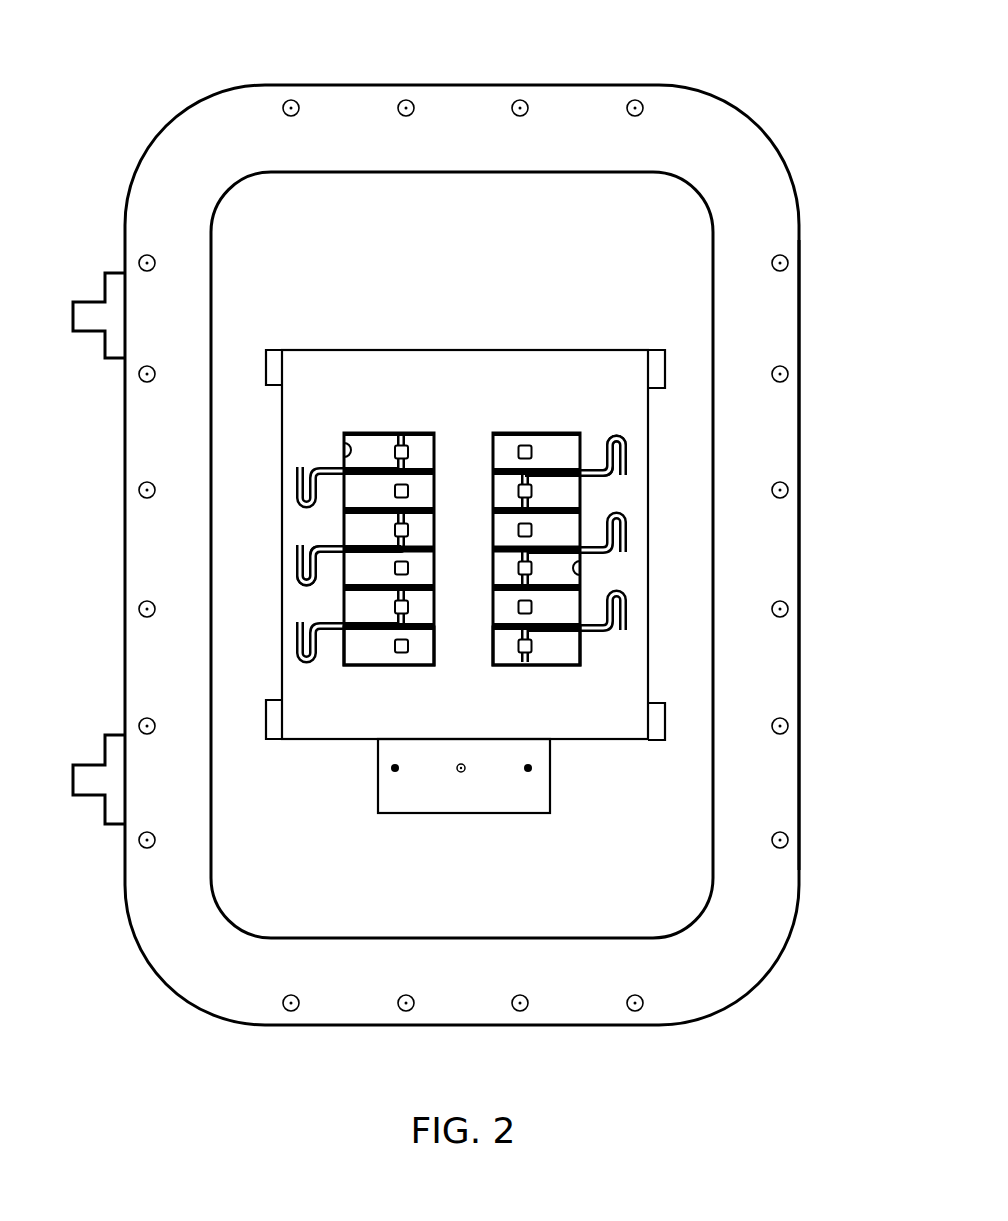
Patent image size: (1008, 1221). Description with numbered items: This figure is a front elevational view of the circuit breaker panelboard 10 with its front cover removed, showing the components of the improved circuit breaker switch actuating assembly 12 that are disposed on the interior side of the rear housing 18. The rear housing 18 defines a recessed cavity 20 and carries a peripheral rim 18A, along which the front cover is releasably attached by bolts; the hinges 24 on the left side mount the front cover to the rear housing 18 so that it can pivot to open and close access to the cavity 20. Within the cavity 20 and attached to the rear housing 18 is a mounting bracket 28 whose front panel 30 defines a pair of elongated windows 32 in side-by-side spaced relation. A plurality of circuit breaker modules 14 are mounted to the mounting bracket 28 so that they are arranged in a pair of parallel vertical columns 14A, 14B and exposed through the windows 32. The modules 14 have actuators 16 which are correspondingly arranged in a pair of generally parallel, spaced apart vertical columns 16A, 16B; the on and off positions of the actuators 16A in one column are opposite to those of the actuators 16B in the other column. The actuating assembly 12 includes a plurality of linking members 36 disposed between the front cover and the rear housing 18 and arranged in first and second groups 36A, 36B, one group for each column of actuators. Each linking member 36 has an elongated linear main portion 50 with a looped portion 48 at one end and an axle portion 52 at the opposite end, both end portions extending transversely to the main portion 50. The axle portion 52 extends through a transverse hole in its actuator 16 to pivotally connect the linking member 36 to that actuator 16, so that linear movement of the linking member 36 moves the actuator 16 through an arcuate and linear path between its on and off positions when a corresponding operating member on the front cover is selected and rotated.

The circuit breaker panelboard 10 is at (459, 560).
The circuit breaker switch actuating assembly 12 is at (462, 486).
The circuit breaker modules 14 is at (420, 655).
The column of circuit breaker modules 14A is at (525, 448).
The column of circuit breaker modules 14B is at (360, 432).
The actuators 16 is at (456, 473).
The column of actuators 16A is at (518, 437).
The column of actuators 16B is at (415, 448).
The rear housing 18 is at (760, 978).
The peripheral rim 18A is at (797, 648).
The recessed cavity 20 is at (307, 865).
The hinges 24 is at (103, 286).
The mounting bracket 28 is at (457, 553).
The front panel 30 is at (453, 365).
The elongated windows 32 is at (343, 447).
The linking members 36 is at (467, 582).
The first group of linking members 36A is at (589, 637).
The second group of linking members 36B is at (332, 636).
The looped portion 48 is at (303, 575).
The elongated linear main portion 50 is at (343, 548).
The axle portion 52 is at (398, 522).